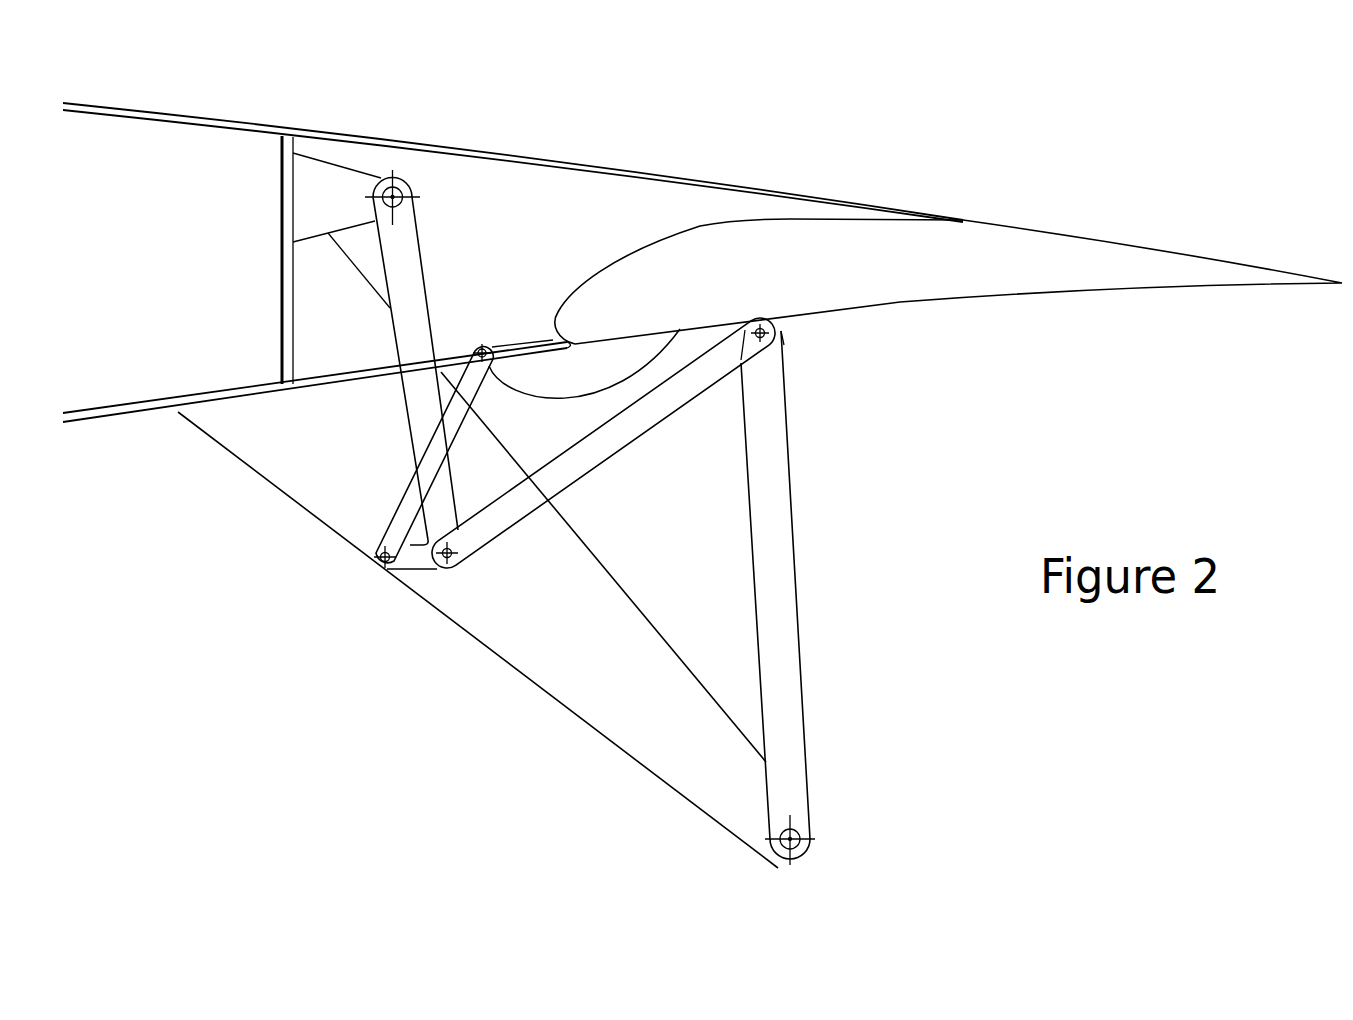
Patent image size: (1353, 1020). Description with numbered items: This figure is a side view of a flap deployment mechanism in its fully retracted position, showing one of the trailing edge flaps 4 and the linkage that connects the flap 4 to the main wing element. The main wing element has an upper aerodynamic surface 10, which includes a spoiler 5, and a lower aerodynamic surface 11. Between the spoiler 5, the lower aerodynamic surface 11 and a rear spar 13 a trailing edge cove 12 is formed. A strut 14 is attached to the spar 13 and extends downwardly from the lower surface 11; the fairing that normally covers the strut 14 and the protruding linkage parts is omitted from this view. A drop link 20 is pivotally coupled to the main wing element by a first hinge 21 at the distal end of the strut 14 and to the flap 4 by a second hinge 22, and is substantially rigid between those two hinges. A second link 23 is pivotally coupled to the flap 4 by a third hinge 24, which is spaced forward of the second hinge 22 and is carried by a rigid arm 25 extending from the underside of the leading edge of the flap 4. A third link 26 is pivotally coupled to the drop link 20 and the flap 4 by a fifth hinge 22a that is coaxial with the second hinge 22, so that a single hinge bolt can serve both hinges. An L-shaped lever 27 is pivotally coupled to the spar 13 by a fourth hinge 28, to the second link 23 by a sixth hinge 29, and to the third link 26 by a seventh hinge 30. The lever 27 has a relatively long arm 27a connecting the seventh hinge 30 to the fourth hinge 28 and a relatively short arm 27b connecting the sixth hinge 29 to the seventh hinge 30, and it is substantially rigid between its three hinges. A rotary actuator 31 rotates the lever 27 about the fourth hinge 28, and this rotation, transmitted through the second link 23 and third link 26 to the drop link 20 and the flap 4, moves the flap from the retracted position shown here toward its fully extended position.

The trailing edge flap 4 is at (902, 292).
The spoiler 5 is at (521, 158).
The upper aerodynamic surface 10 is at (172, 118).
The lower aerodynamic surface 11 is at (119, 413).
The trailing edge cove 12 is at (486, 236).
The rear spar 13 is at (287, 257).
The strut 14 is at (605, 708).
The drop link 20 is at (770, 497).
The first hinge 21 is at (800, 839).
The second hinge 22 is at (783, 320).
The fifth hinge 22a is at (763, 328).
The second link 23 is at (405, 490).
The third hinge 24 is at (484, 348).
The rigid arm 25 is at (617, 353).
The third link 26 is at (605, 450).
The L-shaped lever 27 is at (403, 343).
The long arm 27a is at (410, 403).
The short arm 27b is at (414, 570).
The fourth hinge 28 is at (394, 188).
The sixth hinge 29 is at (382, 572).
The seventh hinge 30 is at (457, 562).
The rotary actuator 31 is at (343, 170).